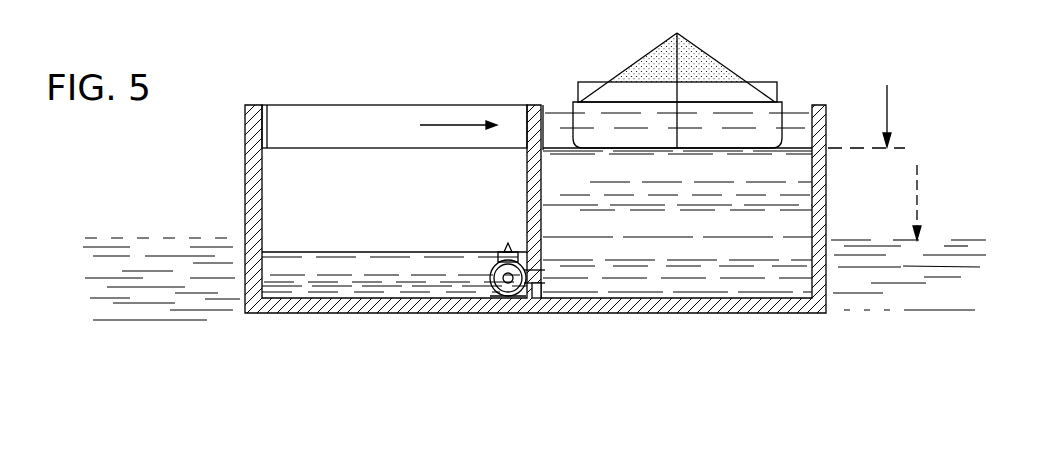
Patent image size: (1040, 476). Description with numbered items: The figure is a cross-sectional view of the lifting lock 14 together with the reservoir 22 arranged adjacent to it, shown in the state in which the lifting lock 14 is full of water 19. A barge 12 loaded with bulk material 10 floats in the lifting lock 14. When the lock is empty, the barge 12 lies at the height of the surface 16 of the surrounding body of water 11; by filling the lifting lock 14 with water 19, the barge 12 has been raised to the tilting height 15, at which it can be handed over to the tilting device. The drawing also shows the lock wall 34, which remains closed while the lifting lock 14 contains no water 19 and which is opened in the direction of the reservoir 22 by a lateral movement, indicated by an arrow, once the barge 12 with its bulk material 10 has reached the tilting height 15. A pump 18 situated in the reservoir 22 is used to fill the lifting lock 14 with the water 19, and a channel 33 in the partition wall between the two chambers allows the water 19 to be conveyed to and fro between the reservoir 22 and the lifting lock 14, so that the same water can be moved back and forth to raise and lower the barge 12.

The bulk material 10 is at (720, 62).
The body of water 11 is at (962, 290).
The barge 12 is at (772, 118).
The lifting lock 14 is at (667, 322).
The tilting height 15 is at (879, 114).
The surface of the body of water 16 is at (936, 201).
The pump 18 is at (514, 284).
The water 19 is at (762, 227).
The reservoir 22 is at (401, 322).
The channel 33 is at (540, 298).
The lock wall 34 is at (395, 115).